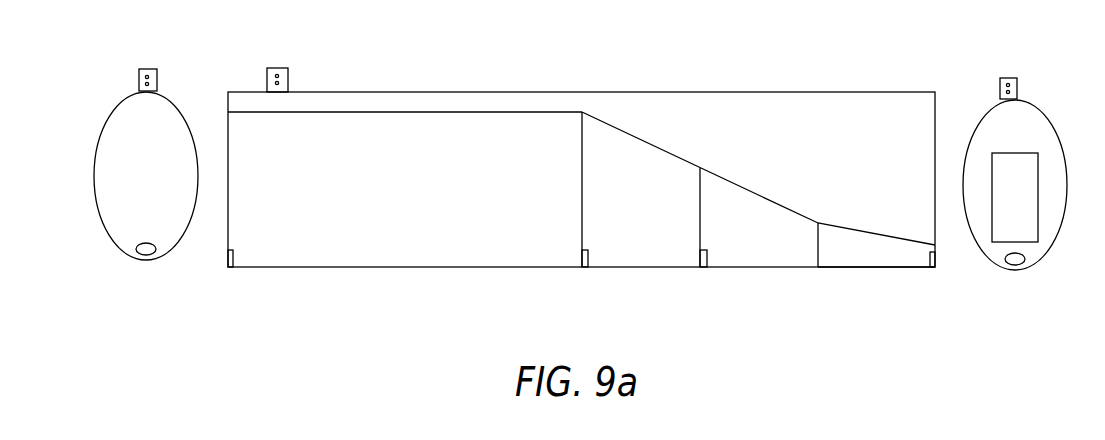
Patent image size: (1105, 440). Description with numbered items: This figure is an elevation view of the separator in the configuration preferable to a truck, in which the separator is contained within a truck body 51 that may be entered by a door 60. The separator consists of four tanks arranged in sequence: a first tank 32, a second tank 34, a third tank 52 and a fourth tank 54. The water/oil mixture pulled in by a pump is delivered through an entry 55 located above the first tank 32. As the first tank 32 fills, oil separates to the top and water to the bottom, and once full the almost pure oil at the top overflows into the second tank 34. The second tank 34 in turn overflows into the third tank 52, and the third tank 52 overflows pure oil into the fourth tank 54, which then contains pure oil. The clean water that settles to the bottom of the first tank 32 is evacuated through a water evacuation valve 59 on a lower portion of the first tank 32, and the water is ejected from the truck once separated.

The first tank 32 is at (383, 125).
The second tank 34 is at (638, 160).
The truck body 51 is at (616, 110).
The third tank 52 is at (750, 220).
The fourth tank 54 is at (862, 245).
The entry 55 is at (147, 72).
The water evacuation valve 59 is at (148, 256).
The door 60 is at (1027, 166).